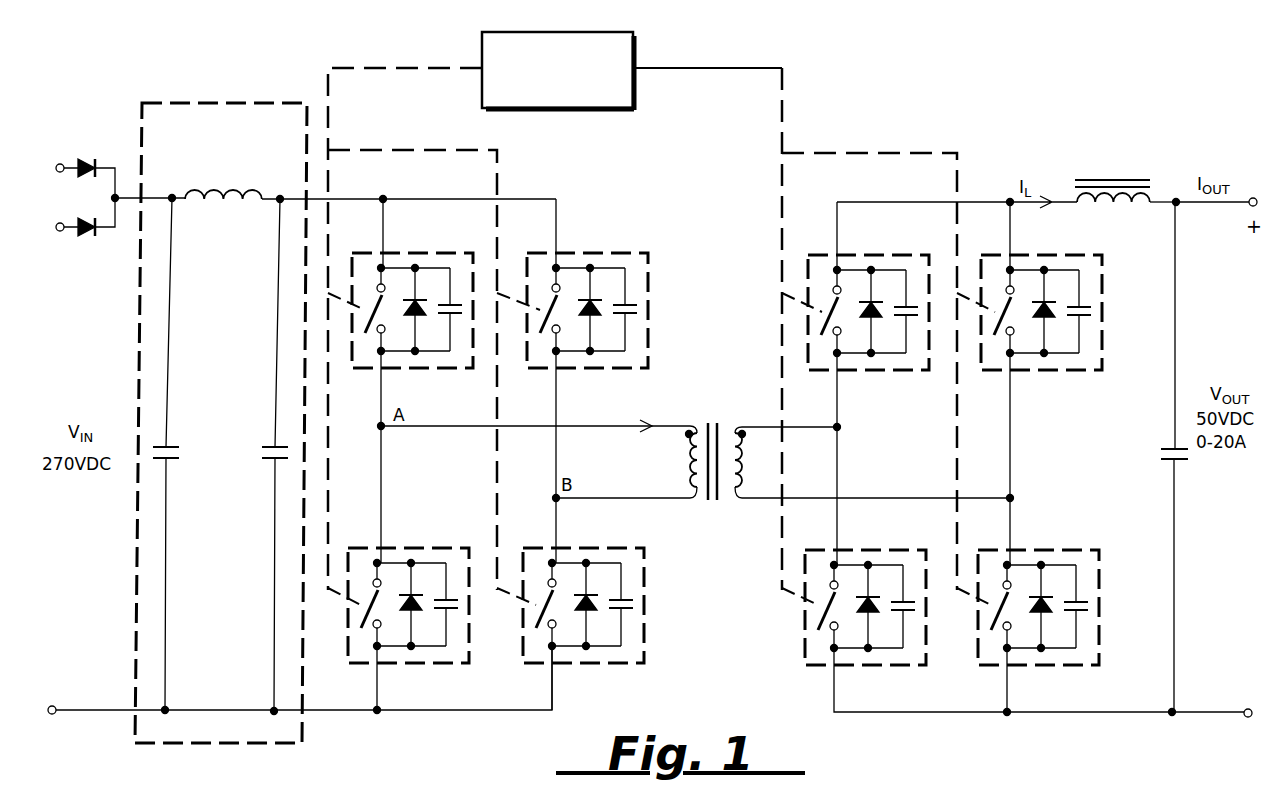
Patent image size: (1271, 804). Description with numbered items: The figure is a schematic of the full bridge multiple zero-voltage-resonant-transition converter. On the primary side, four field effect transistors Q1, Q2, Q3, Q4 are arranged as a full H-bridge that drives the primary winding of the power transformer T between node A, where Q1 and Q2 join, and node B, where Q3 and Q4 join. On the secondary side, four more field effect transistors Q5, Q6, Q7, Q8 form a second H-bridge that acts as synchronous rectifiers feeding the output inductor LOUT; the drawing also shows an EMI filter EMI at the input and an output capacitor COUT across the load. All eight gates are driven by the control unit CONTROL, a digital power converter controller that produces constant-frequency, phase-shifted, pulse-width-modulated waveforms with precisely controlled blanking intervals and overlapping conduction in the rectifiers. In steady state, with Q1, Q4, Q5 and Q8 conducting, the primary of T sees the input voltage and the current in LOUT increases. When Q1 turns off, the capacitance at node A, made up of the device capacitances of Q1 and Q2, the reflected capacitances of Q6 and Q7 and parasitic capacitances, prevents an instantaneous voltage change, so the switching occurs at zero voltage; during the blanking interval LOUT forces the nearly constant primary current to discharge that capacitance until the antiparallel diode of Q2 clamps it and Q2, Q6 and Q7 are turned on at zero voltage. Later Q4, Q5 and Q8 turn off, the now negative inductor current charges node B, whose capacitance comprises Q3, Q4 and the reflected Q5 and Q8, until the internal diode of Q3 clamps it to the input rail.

The field effect transistor Q1 is at (400, 297).
The field effect transistor Q2 is at (398, 592).
The field effect transistor Q3 is at (572, 297).
The field effect transistor Q4 is at (570, 592).
The field effect transistor Q5 is at (855, 298).
The field effect transistor Q6 is at (854, 593).
The field effect transistor Q7 is at (1029, 298).
The field effect transistor Q8 is at (1028, 593).
The output inductor LOUT is at (1093, 178).
The output capacitor COUT is at (1147, 457).
The EMI filter EMI is at (259, 423).
The control unit CONTROL is at (642, 311).
The power transformer T is at (695, 449).